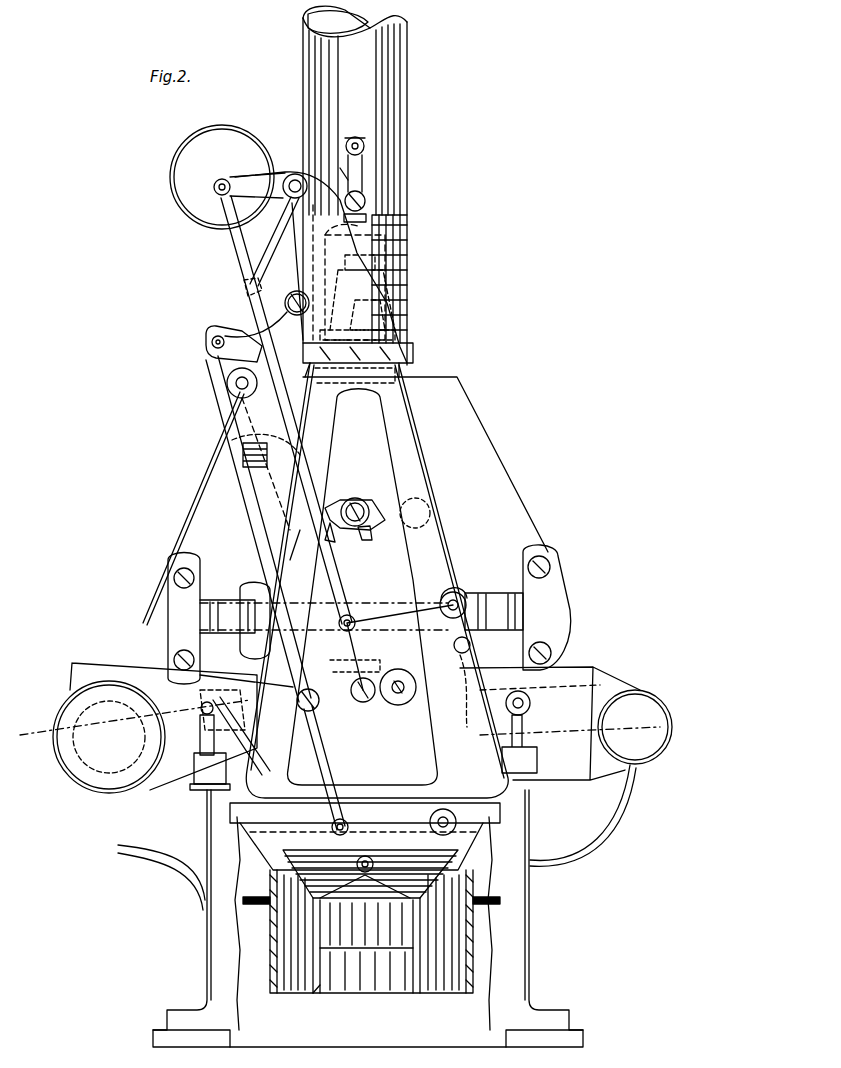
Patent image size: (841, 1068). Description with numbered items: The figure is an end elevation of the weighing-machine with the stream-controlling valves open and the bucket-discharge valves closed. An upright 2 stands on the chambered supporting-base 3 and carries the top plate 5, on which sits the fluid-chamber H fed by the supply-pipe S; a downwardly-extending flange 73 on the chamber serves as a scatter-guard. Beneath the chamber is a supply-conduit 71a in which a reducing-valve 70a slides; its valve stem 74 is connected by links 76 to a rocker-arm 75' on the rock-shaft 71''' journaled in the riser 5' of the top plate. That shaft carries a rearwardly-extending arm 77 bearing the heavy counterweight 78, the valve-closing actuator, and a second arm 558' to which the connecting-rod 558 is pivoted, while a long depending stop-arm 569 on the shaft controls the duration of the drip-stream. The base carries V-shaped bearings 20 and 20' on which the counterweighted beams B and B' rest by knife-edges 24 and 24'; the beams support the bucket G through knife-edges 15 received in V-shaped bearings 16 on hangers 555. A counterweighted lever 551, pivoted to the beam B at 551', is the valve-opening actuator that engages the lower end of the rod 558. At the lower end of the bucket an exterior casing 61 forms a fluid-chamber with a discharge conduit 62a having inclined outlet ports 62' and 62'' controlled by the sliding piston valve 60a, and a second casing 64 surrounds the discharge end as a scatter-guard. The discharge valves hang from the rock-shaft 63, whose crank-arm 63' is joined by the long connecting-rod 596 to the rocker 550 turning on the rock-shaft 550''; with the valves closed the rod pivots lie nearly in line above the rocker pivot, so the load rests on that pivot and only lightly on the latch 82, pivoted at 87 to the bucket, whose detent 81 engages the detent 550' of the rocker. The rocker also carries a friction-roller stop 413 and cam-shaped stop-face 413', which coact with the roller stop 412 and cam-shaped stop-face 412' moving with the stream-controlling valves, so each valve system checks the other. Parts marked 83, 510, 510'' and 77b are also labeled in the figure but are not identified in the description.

The supply-pipe S is at (386, 105).
The links 76 is at (357, 182).
The valve stem 74 is at (360, 212).
The rocker-arm 75' is at (338, 169).
The fluid-chamber H is at (403, 279).
The side frame 2 is at (418, 478).
The top plate 5 is at (371, 352).
The stream-controlling valve 70a is at (355, 356).
The supply-conduit 71a is at (397, 330).
The downwardly-extending flange 73 is at (405, 316).
The stop-face 413' is at (352, 287).
The riser 5' is at (319, 244).
The counterweight 78 is at (188, 183).
The rock-shaft 71''' is at (291, 169).
The rearwardly-extending arm 558' is at (245, 172).
The connecting-rod 558 is at (268, 410).
The rearwardly-extending arm 77 is at (292, 200).
The stop 412 is at (227, 285).
The stop-face 412' is at (254, 303).
The valve-stop 413 is at (274, 373).
The rocker 550 is at (239, 514).
The rock-shaft 550'' is at (208, 383).
The depending stop-arm 569 is at (160, 538).
The connecting-rod 596 is at (243, 522).
The bucket G is at (309, 613).
The detent 550' is at (250, 490).
The detent 81 is at (297, 550).
The latch 82 is at (350, 498).
The pawl 83 is at (332, 530).
The pivot 87 is at (366, 540).
The hangers 555 is at (488, 603).
The lever 510 is at (396, 644).
The roller 510'' is at (397, 696).
The V-shaped bearings 16 is at (258, 668).
The pivot 551' is at (338, 768).
The lever 551 is at (246, 725).
The knife-edges 15 is at (247, 722).
The knife-edges 24 is at (192, 718).
The V-shaped bearing 20 is at (196, 752).
The counterweighted beam B is at (138, 780).
The counterweighted beam B' is at (566, 760).
The knife-edges 24' is at (539, 696).
The V-shaped bearing 20' is at (536, 739).
The lever 77b is at (460, 694).
The supporting-base 3 is at (220, 932).
The crank-arm 63' is at (361, 821).
The rock-shaft 63 is at (426, 822).
The exterior casing 61 is at (270, 870).
The second casing 64 is at (272, 935).
The outlet ports 62' is at (300, 945).
The outlet ports 62'' is at (437, 945).
The bucket-discharge valve 60a is at (395, 940).
The bucket-discharge conduit 62a is at (318, 990).